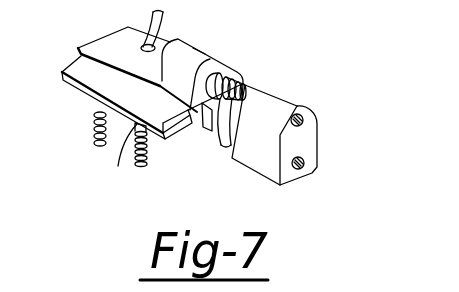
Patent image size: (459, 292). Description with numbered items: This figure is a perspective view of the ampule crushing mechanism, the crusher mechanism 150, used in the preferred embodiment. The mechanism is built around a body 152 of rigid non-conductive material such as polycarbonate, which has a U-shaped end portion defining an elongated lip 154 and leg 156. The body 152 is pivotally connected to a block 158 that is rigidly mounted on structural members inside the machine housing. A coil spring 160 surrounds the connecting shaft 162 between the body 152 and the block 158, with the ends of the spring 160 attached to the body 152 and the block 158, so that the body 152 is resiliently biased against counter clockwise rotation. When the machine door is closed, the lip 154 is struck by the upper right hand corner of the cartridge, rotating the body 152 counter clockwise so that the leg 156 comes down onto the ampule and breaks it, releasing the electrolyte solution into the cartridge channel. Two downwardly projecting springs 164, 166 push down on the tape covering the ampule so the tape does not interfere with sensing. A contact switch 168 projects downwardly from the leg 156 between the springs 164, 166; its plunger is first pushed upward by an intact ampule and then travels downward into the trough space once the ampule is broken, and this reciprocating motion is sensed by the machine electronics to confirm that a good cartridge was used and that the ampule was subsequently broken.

The crusher mechanism 150 is at (313, 52).
The body 152 is at (118, 37).
The lip 154 is at (227, 66).
The leg 156 is at (168, 140).
The block 158 is at (308, 132).
The coil spring 160 is at (229, 143).
The connecting shaft 162 is at (250, 94).
The spring 164 is at (93, 127).
The spring 166 is at (138, 166).
The contact switch 168 is at (118, 166).